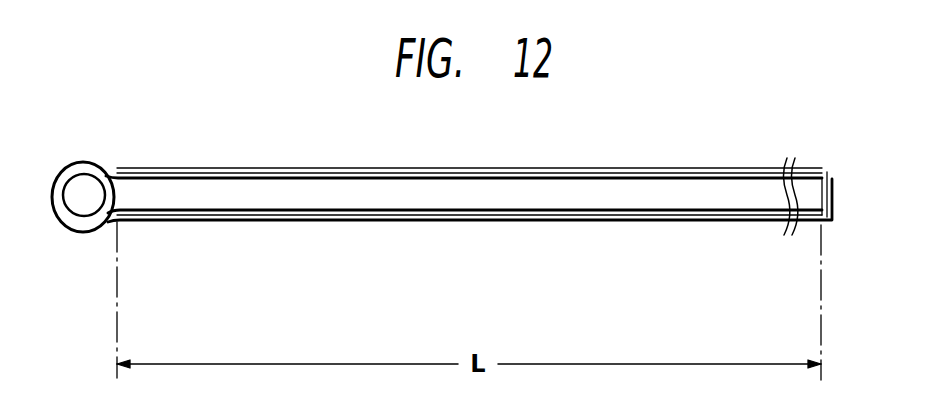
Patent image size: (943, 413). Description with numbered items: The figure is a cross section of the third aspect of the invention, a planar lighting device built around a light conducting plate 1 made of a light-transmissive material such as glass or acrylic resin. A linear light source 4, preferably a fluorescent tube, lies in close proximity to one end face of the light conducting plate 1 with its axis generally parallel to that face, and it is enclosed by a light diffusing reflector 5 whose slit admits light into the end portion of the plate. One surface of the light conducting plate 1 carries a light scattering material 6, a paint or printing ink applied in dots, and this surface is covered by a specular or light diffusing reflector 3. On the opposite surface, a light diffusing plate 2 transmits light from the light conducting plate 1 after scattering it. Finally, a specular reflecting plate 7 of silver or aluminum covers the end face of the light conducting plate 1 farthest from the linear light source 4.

The light conducting plate 1 is at (614, 187).
The light diffusing plate 2 is at (389, 168).
The reflector 3 is at (472, 218).
The linear light source 4 is at (82, 192).
The light diffusing reflector 5 is at (85, 232).
The light scattering material 6 is at (684, 221).
The specular reflecting plate 7 is at (828, 178).